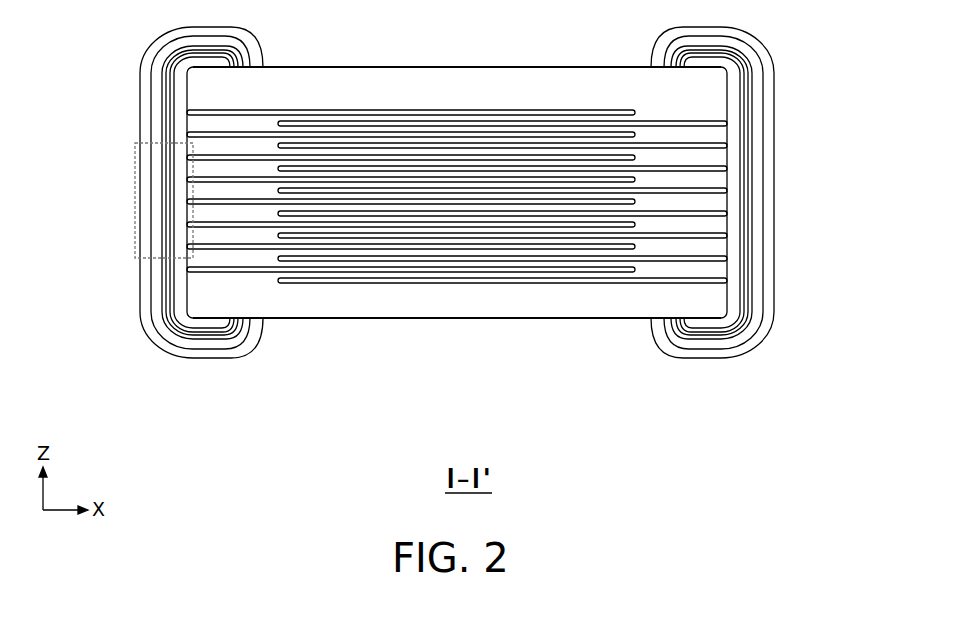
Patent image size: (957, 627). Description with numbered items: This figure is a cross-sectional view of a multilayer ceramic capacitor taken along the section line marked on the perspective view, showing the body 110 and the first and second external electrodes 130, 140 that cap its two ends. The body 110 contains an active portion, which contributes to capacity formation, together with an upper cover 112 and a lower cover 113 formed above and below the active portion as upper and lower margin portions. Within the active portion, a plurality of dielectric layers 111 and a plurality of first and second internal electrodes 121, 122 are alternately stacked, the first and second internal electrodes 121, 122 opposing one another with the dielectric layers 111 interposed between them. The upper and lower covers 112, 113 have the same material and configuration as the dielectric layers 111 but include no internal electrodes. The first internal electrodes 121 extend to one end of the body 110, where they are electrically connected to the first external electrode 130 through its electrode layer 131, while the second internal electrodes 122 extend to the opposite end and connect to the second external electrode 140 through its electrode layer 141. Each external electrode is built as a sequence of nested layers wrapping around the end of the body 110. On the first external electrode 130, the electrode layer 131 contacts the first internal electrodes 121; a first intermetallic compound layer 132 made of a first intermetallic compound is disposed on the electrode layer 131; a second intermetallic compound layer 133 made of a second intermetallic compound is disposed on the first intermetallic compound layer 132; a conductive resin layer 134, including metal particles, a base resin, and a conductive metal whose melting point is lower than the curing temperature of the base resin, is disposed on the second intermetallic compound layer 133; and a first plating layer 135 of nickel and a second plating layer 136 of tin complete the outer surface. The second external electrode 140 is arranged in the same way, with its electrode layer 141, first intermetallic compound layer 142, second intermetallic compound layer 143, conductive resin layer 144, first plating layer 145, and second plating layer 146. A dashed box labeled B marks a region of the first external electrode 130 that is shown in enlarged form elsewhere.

The body 110 is at (452, 320).
The dielectric layer 111 is at (433, 117).
The upper cover 112 is at (590, 93).
The lower cover 113 is at (532, 305).
The first internal electrode 121 is at (382, 108).
The second internal electrode 122 is at (505, 122).
The first external electrode 130 is at (209, 251).
The electrode layer 131 is at (262, 320).
The first intermetallic compound layer 132 is at (240, 343).
The second intermetallic compound layer 133 is at (217, 338).
The conductive resin layer 134 is at (197, 343).
The first plating layer 135 is at (168, 348).
The second plating layer 136 is at (168, 228).
The second external electrode 140 is at (704, 251).
The electrode layer 141 is at (654, 322).
The first intermetallic compound layer 142 is at (675, 335).
The second intermetallic compound layer 143 is at (693, 342).
The conductive resin layer 144 is at (713, 342).
The first plating layer 145 is at (743, 332).
The second plating layer 146 is at (746, 227).
The enlarged region B is at (135, 202).